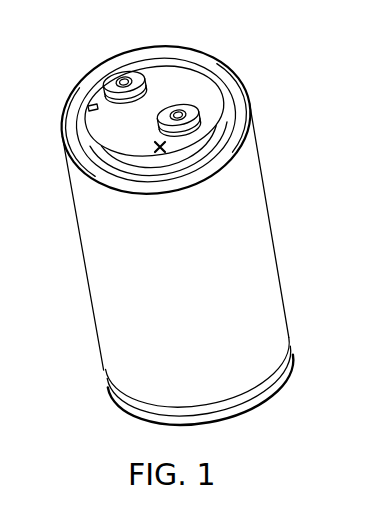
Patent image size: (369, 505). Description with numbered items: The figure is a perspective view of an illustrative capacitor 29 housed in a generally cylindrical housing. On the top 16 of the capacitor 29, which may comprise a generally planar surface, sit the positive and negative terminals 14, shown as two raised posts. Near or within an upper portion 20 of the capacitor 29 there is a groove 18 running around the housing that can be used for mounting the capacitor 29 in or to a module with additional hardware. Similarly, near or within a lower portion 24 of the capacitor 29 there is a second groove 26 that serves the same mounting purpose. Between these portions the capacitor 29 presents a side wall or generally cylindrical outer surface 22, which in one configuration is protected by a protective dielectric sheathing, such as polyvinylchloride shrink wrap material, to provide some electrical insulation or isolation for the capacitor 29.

The positive and negative terminals 14 is at (144, 70).
The top 16 is at (212, 95).
The groove 18 is at (243, 130).
The upper portion 20 is at (247, 172).
The generally cylindrical outer surface 22 is at (242, 257).
The lower portion 24 is at (277, 330).
The groove 26 is at (268, 390).
The capacitor 29 is at (191, 222).